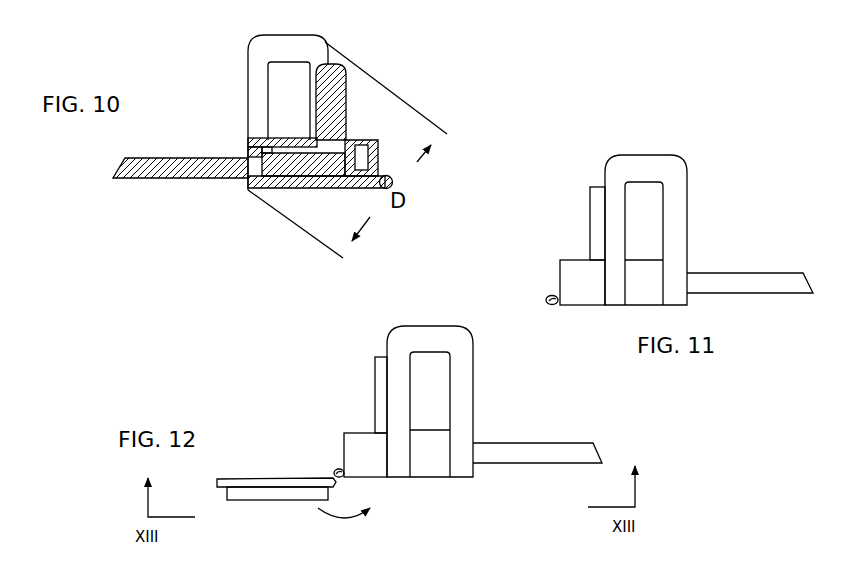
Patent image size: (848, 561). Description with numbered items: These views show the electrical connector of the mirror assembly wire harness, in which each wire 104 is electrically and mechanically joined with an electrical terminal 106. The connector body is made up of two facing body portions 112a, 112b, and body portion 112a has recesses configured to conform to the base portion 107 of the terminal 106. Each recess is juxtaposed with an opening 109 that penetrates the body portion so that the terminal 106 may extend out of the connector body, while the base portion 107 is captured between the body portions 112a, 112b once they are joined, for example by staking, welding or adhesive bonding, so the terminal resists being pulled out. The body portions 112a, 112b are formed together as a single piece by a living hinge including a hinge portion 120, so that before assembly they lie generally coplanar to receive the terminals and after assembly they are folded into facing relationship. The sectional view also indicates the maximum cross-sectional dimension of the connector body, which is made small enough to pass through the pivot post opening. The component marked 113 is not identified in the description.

In FIG. 10, the wire 104 is at (210, 176).
In FIG. 11, the wire 104 is at (720, 272).
In FIG. 12, the wire 104 is at (510, 443).
In FIG. 10, the electrical terminal 106 is at (347, 106).
In FIG. 11, the electrical terminal 106 is at (590, 190).
In FIG. 12, the electrical terminal 106 is at (375, 360).
In FIG. 10, the base portion of terminal 107 is at (252, 140).
In FIG. 10, the opening 109 is at (314, 139).
In FIG. 10, the body portion 112a is at (366, 137).
In FIG. 11, the body portion 112a is at (582, 282).
In FIG. 12, the body portion 112a is at (367, 480).
In FIG. 10, the body portion 112b is at (317, 188).
In FIG. 12, the body portion 112b is at (282, 502).
In FIG. 10, the housing 113 is at (293, 35).
In FIG. 11, the housing 113 is at (688, 170).
In FIG. 12, the housing 113 is at (468, 333).
In FIG. 10, the hinge portion 120 is at (397, 176).
In FIG. 11, the hinge portion 120 is at (548, 295).
In FIG. 12, the hinge portion 120 is at (336, 472).